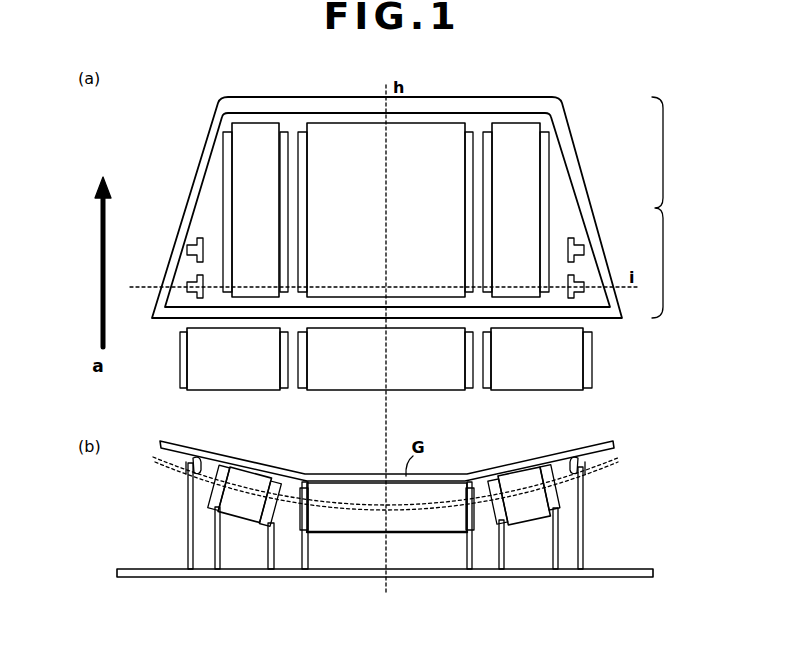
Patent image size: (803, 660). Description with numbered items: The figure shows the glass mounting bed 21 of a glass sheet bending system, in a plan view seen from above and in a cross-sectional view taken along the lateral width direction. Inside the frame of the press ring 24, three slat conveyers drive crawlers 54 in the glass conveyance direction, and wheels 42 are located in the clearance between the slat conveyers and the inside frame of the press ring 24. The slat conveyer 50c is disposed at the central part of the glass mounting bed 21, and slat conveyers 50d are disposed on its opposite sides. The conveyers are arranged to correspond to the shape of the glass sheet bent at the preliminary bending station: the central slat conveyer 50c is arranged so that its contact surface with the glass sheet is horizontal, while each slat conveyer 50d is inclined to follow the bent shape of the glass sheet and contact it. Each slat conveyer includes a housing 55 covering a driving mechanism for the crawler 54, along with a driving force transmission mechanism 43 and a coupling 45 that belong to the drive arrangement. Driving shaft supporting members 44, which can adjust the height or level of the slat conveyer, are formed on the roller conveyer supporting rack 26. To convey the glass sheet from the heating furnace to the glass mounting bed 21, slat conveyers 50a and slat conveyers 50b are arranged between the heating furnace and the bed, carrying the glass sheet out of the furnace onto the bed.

The glass mounting bed 21 is at (325, 97).
The press ring 24 is at (572, 167).
The roller conveyer supporting rack 26 is at (650, 568).
The wheel 42 is at (178, 280).
The driving force transmission mechanism 43 is at (188, 494).
The driving shaft supporting member 44 is at (213, 538).
The coupling 45 is at (185, 468).
The slat conveyer 50a is at (355, 383).
The slat conveyer 50b is at (240, 383).
The slat conveyer 50c is at (398, 130).
The slat conveyer 50d is at (236, 138).
The crawler 54 is at (347, 150).
The housing 55 is at (284, 131).